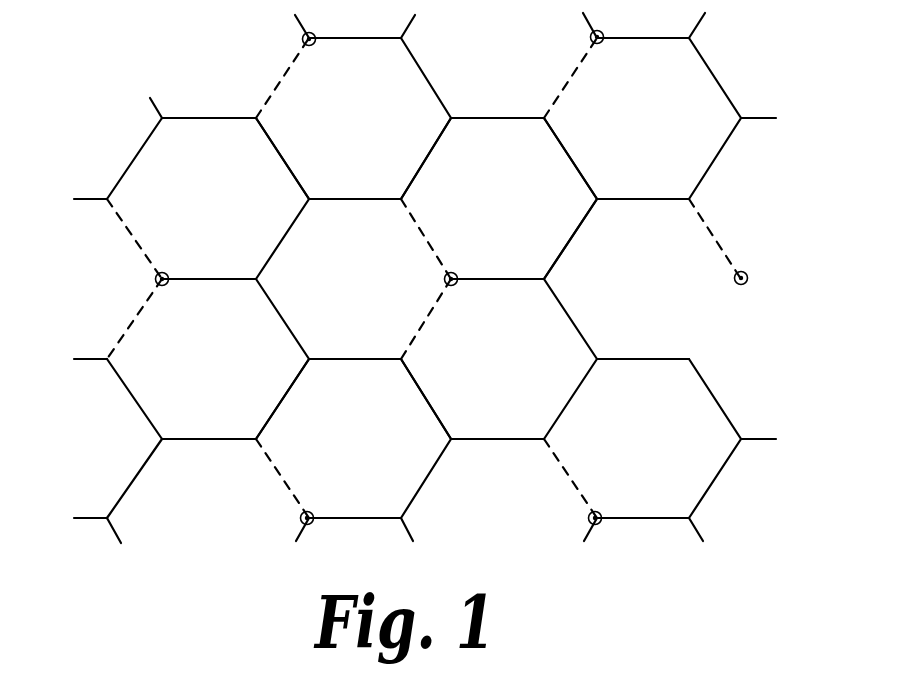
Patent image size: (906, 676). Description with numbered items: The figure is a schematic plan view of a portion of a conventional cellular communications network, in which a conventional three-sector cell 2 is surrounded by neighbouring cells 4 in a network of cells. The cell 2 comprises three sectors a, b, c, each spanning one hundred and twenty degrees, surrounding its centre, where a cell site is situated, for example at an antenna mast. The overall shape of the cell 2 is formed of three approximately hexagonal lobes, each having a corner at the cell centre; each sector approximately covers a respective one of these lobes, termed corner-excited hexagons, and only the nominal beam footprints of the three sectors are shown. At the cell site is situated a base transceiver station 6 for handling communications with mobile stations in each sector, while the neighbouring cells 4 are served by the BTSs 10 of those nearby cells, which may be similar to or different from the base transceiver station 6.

The three-sector cell 2 is at (487, 206).
The neighbouring cells 4 is at (339, 132).
The base transceiver station 6 is at (456, 284).
The BTSs of nearby cells 10 is at (302, 44).